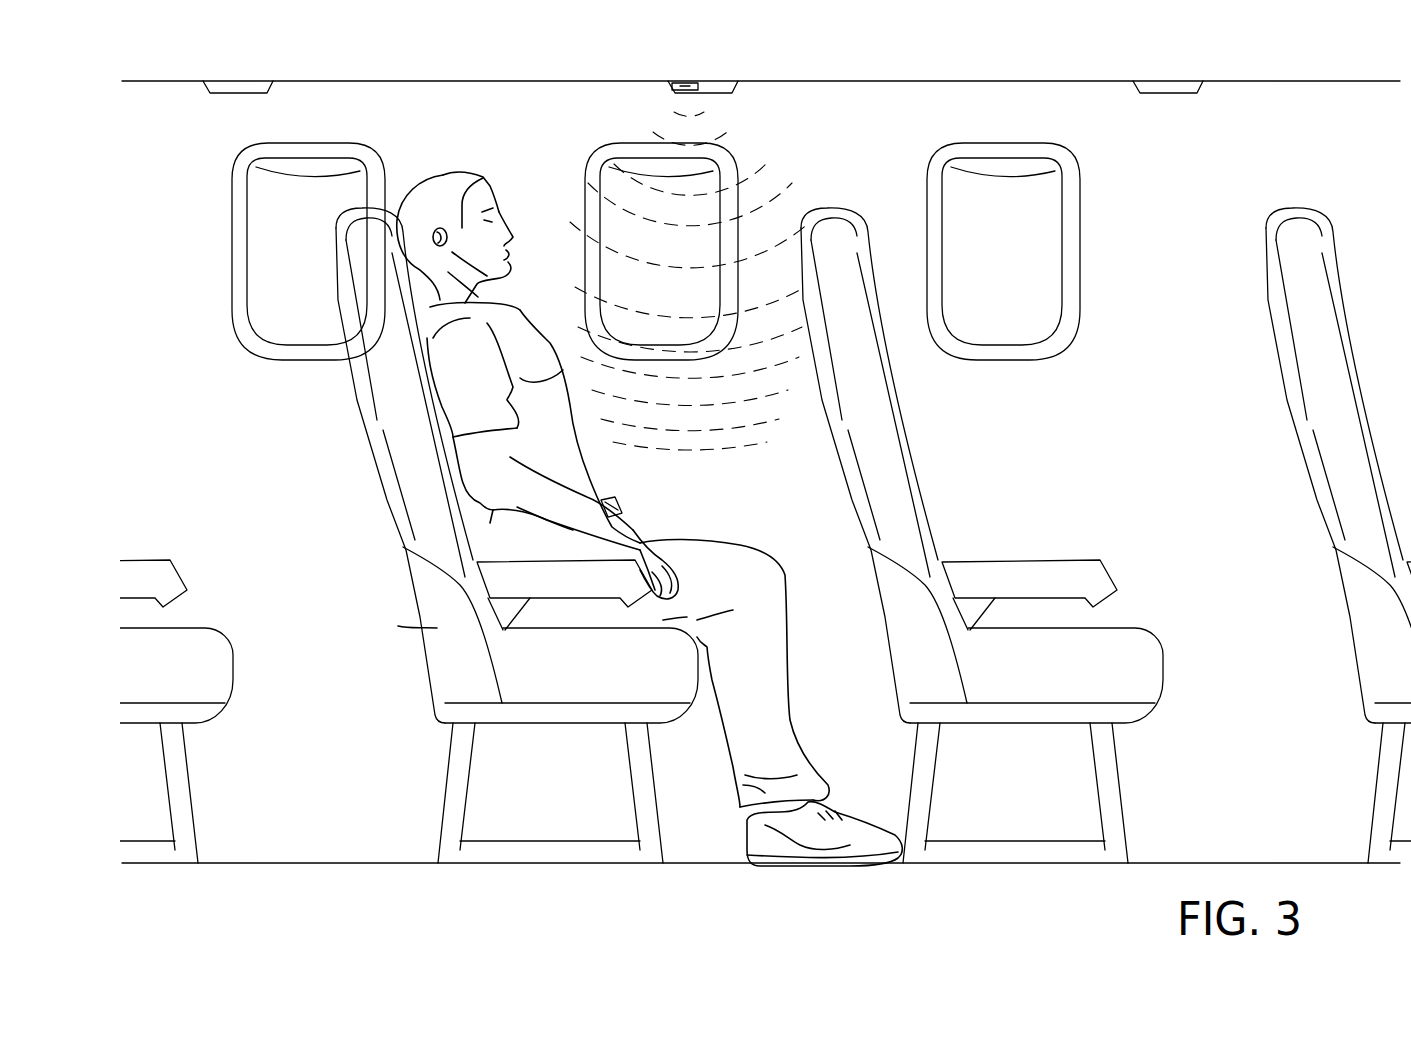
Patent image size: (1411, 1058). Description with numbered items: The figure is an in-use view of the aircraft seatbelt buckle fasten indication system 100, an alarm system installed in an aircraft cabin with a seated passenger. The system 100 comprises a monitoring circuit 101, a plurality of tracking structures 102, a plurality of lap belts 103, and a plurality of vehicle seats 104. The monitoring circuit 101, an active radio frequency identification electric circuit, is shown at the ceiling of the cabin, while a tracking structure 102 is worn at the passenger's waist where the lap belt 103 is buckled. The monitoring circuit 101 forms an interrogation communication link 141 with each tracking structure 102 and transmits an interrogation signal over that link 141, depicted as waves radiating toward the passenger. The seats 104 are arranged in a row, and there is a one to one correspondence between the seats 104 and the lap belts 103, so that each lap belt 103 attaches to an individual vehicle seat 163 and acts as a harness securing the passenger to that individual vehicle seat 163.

The aircraft seatbelt buckle fasten indication system 100 is at (956, 76).
The monitoring circuit 101 is at (686, 80).
The tracking structure 102 is at (620, 502).
The lap belt 103 is at (479, 535).
The vehicle seat 104 is at (1292, 426).
The interrogation communication link 141 is at (757, 293).
The individual vehicle seat 163 is at (412, 494).